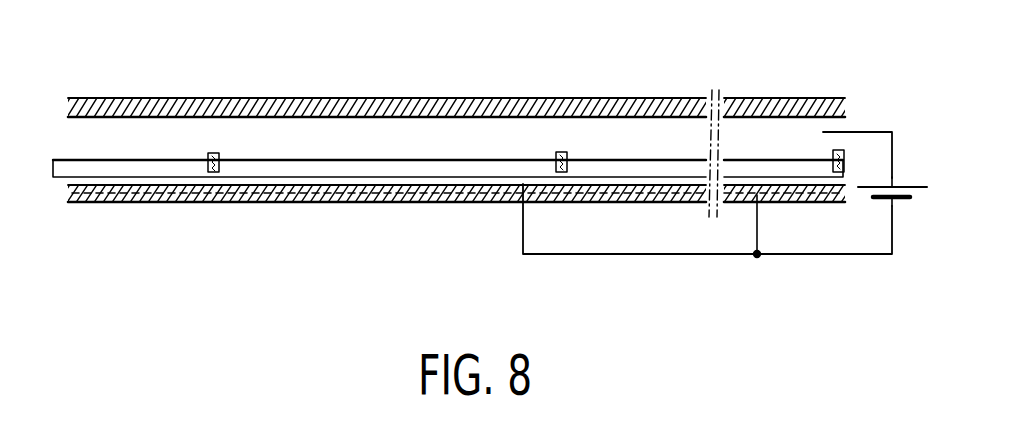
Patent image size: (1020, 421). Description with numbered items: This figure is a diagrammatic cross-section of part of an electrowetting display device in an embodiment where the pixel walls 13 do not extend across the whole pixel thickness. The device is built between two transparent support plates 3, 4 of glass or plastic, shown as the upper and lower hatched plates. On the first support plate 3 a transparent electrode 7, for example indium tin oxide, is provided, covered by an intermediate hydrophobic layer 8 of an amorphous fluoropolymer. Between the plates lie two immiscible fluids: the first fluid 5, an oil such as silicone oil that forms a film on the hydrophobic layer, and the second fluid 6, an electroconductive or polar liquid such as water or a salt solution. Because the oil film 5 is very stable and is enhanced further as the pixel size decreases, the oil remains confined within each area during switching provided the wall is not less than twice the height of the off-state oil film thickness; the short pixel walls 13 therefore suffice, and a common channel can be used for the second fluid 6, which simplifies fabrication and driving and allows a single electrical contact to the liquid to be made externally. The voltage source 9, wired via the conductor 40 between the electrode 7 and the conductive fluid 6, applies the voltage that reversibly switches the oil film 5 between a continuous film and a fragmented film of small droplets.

The first support plate 3 is at (497, 201).
The second support plate 4 is at (337, 98).
The first fluid 5 is at (116, 160).
The second fluid 6 is at (437, 130).
The transparent electrode 7 is at (675, 201).
The intermediate hydrophobic layer 8 is at (783, 183).
The voltage source 9 is at (900, 199).
The pixel walls 13 is at (561, 152).
The connecting wire 40 is at (598, 255).